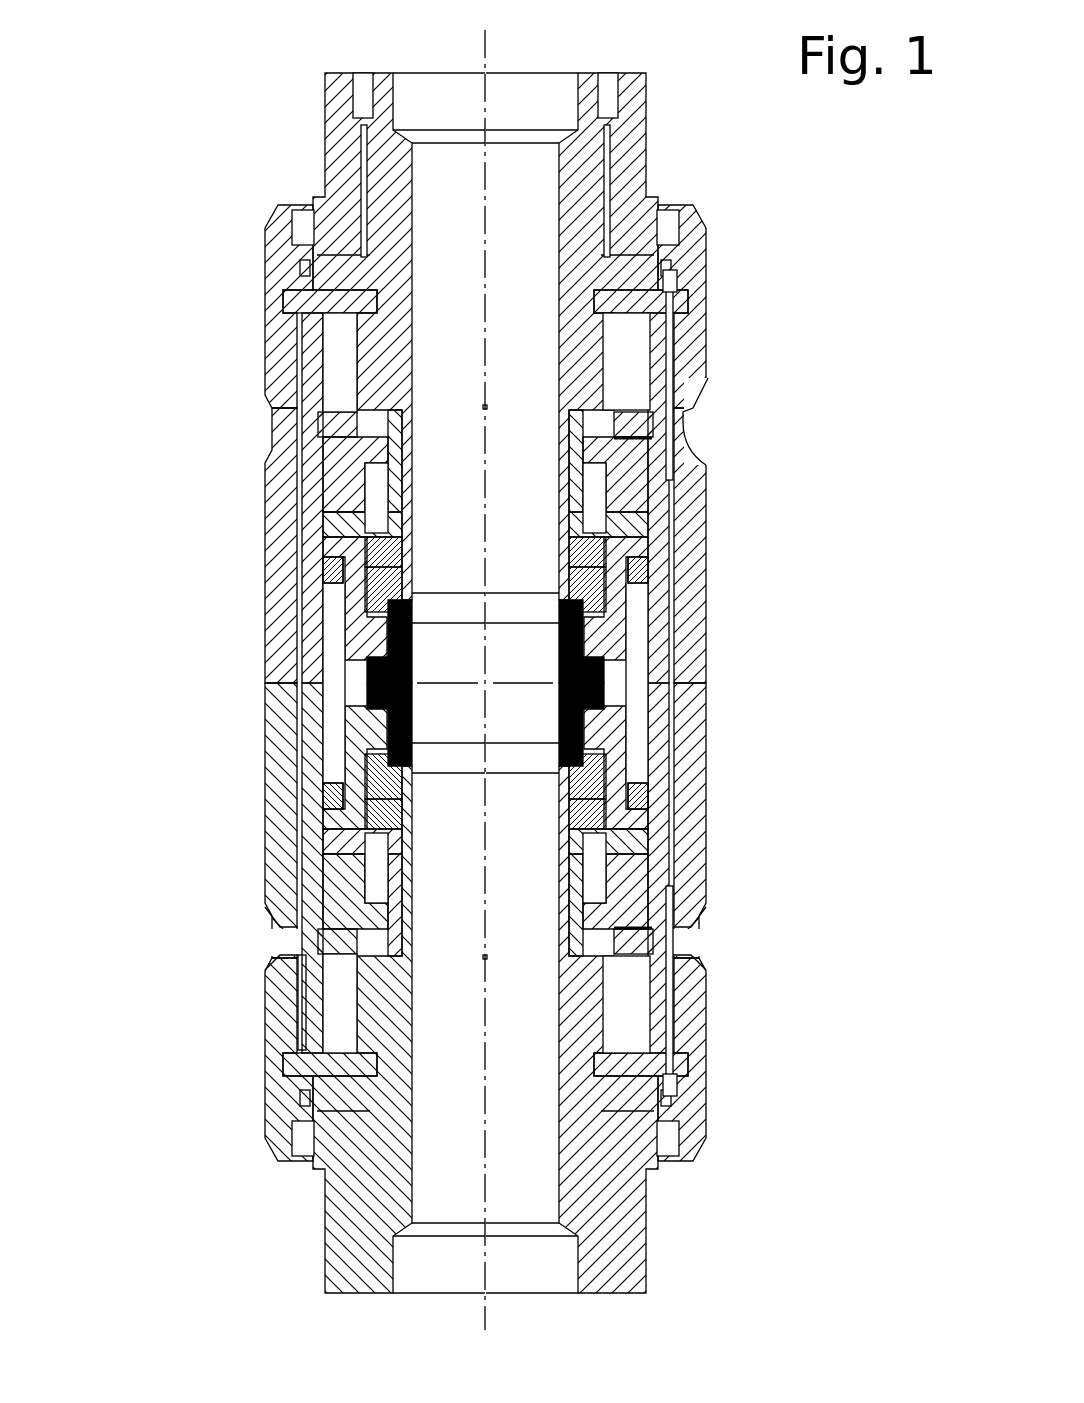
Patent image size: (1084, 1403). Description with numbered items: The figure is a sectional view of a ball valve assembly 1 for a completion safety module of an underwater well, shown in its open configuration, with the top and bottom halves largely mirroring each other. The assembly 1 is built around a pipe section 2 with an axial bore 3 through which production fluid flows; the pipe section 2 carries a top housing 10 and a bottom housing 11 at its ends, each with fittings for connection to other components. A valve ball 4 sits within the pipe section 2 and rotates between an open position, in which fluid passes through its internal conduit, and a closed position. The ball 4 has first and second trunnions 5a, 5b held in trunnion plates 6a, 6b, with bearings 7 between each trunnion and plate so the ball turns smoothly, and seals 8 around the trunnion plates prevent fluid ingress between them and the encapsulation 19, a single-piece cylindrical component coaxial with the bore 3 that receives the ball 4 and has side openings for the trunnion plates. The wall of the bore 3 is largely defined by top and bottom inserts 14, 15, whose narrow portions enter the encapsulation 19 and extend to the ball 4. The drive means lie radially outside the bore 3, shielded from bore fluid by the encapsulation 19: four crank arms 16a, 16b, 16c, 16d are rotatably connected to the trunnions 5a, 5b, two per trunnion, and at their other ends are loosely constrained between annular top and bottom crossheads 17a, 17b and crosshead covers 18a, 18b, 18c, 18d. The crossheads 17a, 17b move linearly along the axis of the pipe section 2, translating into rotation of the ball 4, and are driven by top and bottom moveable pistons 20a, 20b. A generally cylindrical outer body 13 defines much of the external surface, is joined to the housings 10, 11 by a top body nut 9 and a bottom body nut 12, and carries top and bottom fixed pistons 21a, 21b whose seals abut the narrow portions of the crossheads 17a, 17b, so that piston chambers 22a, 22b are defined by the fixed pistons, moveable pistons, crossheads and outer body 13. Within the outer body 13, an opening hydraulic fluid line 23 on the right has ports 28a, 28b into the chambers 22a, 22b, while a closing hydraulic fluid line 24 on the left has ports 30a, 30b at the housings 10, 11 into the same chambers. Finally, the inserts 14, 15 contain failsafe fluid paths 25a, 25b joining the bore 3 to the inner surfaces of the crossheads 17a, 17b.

The ball valve assembly 1 is at (240, 184).
The pipe section 2 is at (650, 82).
The axial bore 3 is at (457, 1192).
The valve ball 4 is at (607, 695).
The first trunnion 5a is at (365, 684).
The second trunnion 5b is at (607, 762).
The trunnion plate 6a is at (365, 593).
The trunnion plate 6b is at (600, 590).
The bearings 7 is at (365, 790).
The seals 8 is at (357, 747).
The top body nut 9 is at (695, 258).
The top housing 10 is at (633, 153).
The bottom housing 11 is at (627, 1215).
The bottom body nut 12 is at (697, 1070).
The outer body 13 is at (697, 522).
The top insert 14 is at (390, 313).
The bottom insert 15 is at (400, 988).
The crank arm 16a is at (335, 535).
The crank arm 16b is at (340, 833).
The crank arm 16c is at (633, 535).
The crank arm 16d is at (637, 825).
The top crosshead 17a is at (368, 390).
The bottom crosshead 17b is at (367, 995).
The crosshead cover 18a is at (325, 567).
The crosshead cover 18b is at (327, 792).
The crosshead cover 18c is at (640, 575).
The crosshead cover 18d is at (638, 798).
The encapsulation 19 is at (585, 418).
The top moveable piston 20a is at (343, 305).
The bottom moveable piston 20b is at (625, 1065).
The top fixed piston 21a is at (335, 428).
The bottom fixed piston 21b is at (327, 952).
The top piston chamber 22a is at (633, 338).
The bottom piston chamber 22b is at (633, 1022).
The opening hydraulic fluid line 23 is at (667, 480).
The closing hydraulic fluid line 24 is at (305, 1012).
The top failsafe fluid path 25a is at (377, 403).
The bottom failsafe fluid path 25b is at (412, 958).
The top port 28a is at (648, 413).
The bottom port 28b is at (683, 952).
The top port 30a is at (307, 268).
The bottom port 30b is at (337, 1077).